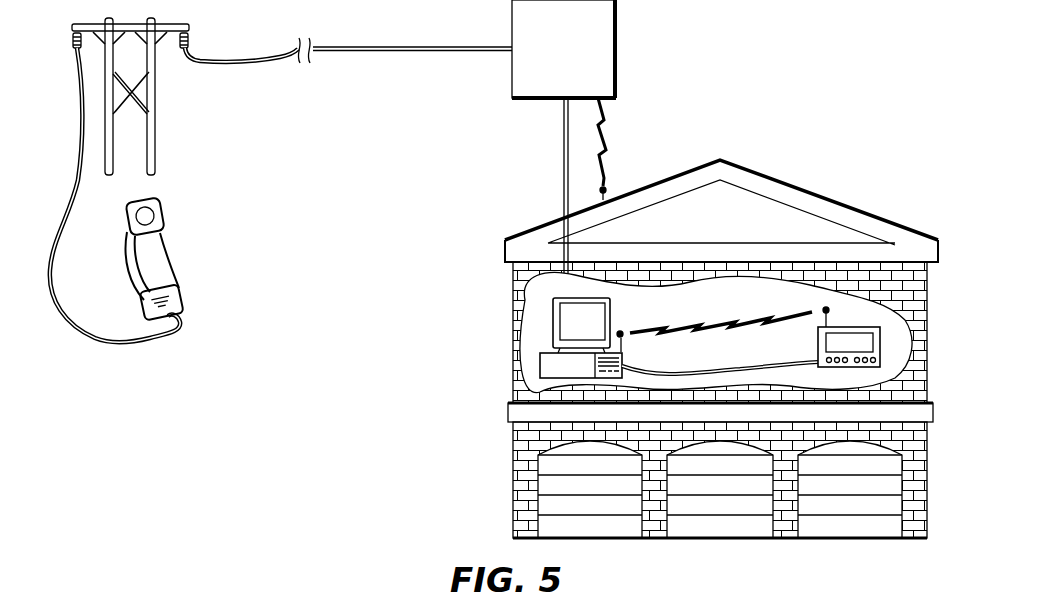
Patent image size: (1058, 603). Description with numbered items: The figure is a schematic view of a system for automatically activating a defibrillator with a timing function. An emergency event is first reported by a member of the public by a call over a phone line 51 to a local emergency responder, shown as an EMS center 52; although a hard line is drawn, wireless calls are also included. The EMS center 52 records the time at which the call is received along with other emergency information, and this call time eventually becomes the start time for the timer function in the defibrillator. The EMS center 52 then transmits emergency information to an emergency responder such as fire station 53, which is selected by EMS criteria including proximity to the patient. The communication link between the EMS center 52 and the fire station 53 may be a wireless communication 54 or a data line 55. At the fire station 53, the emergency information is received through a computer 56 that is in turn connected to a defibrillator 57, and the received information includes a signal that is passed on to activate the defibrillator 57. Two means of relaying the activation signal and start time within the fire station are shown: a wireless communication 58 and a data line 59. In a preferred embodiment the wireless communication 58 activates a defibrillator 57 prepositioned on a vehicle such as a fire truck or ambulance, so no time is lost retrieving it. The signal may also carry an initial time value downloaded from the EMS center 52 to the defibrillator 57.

The phone line 51 is at (350, 50).
The EMS center 52 is at (579, 60).
The fire station 53 is at (699, 233).
The wireless communication 54 is at (601, 130).
The data line 55 is at (563, 117).
The computer 56 is at (560, 298).
The defibrillator 57 is at (870, 327).
The wireless communication 58 is at (735, 320).
The data line 59 is at (789, 365).